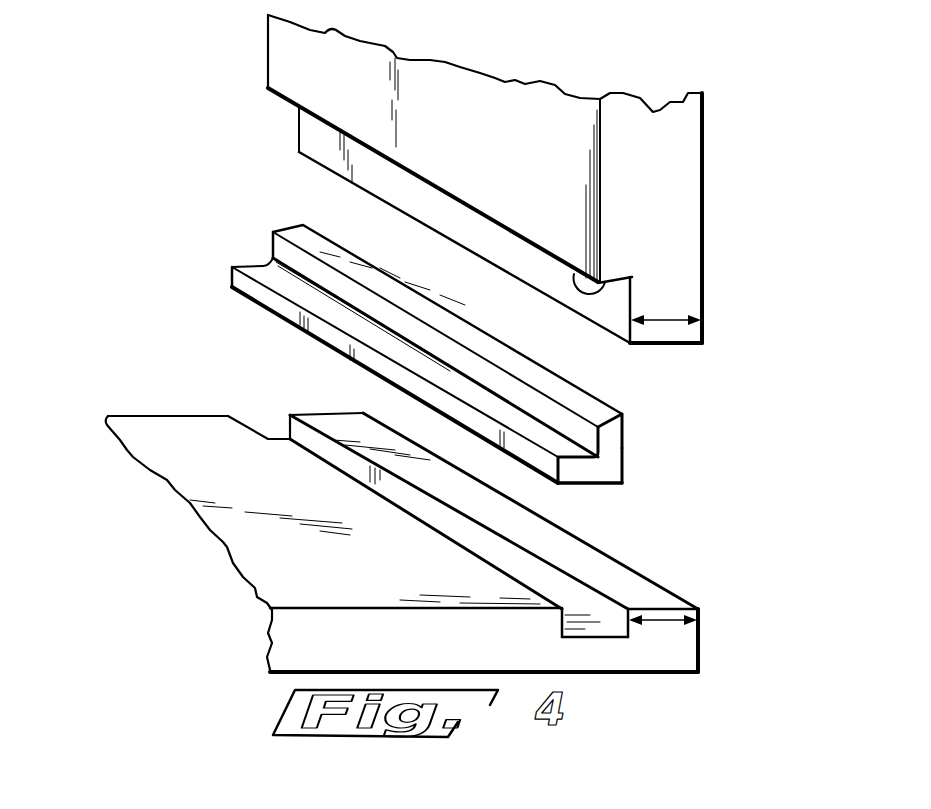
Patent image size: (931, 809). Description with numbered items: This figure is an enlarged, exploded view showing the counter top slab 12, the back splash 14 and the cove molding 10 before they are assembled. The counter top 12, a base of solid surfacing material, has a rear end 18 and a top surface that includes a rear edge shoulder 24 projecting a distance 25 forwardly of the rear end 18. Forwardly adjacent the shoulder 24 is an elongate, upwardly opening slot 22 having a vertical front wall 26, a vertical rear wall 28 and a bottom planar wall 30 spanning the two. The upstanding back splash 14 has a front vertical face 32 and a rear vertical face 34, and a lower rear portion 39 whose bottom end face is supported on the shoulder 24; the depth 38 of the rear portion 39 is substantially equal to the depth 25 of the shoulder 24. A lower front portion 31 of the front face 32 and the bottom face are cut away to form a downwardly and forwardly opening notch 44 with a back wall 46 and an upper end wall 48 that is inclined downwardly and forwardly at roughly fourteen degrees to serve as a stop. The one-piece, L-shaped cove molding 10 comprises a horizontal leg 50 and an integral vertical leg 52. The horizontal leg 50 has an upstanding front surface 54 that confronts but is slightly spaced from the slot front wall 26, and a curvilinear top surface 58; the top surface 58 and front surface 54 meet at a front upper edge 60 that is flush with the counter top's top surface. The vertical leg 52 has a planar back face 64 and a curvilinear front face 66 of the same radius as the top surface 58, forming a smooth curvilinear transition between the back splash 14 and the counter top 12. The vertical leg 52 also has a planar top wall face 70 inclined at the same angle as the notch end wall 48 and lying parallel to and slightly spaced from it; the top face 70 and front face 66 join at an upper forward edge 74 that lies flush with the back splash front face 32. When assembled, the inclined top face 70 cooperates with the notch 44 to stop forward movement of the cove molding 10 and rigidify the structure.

The cove molding 10 is at (660, 463).
The counter top slab 12 is at (110, 393).
The back splash 14 is at (640, 100).
The rear end 18 is at (700, 645).
The slot 22 is at (260, 418).
The rear edge shoulder 24 is at (600, 573).
The depth of shoulder 25 is at (700, 604).
The front wall 26 is at (597, 631).
The rear wall 28 is at (622, 613).
The bottom planar wall 30 is at (665, 618).
The lower front portion 31 is at (278, 125).
The front vertical face 32 is at (522, 142).
The rear vertical face 34 is at (703, 128).
The depth of rear back splash portion 38 is at (668, 318).
The lower rear portion 39 is at (673, 235).
The notch 44 is at (620, 297).
The back wall 46 is at (557, 281).
The upper end wall 48 is at (575, 275).
The horizontal leg 50 is at (585, 484).
The vertical leg 52 is at (628, 420).
The front surface 54 is at (360, 350).
The curvilinear top surface 58 is at (256, 270).
The front upper edge 60 is at (303, 308).
The back face 64 is at (628, 449).
The curvilinear front face 66 is at (578, 418).
The top wall face 70 is at (297, 235).
The upper forward edge 74 is at (370, 283).